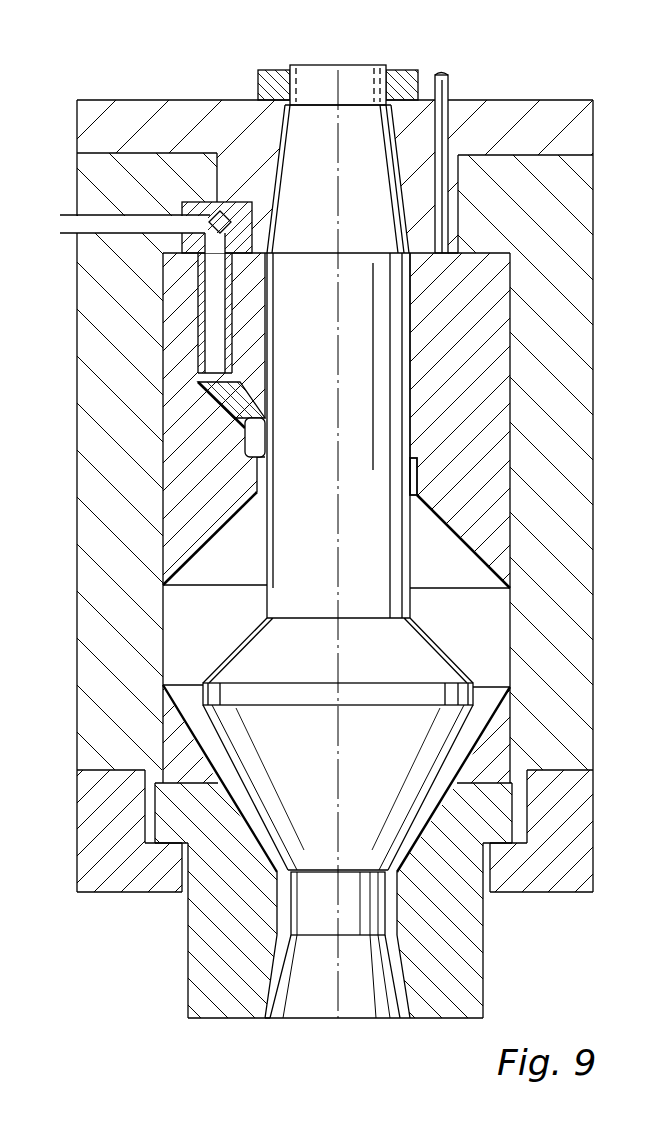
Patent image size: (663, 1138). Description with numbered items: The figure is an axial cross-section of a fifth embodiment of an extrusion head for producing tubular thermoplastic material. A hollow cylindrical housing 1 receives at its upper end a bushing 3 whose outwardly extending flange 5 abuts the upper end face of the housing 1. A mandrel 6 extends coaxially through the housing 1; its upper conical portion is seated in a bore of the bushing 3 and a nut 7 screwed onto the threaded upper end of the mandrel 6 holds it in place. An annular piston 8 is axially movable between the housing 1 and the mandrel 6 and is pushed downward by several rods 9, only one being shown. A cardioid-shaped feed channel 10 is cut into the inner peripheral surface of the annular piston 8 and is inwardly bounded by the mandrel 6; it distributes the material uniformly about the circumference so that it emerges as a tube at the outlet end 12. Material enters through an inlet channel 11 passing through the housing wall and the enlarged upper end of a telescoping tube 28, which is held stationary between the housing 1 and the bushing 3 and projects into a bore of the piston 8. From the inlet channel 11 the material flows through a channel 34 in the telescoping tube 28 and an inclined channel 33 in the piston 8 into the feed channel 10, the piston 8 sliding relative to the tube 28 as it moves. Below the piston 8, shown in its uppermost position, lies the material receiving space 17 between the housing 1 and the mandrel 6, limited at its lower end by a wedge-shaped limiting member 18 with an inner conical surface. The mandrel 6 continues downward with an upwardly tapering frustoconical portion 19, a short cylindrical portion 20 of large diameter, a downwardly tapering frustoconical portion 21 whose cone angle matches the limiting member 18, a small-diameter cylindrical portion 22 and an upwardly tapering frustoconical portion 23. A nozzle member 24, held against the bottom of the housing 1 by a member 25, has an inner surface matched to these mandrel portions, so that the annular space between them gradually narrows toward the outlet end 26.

The housing 1 is at (83, 560).
The bushing 3 is at (452, 207).
The flange 5 is at (545, 108).
The mandrel 6 is at (343, 492).
The nut 7 is at (398, 82).
The annular piston 8 is at (470, 394).
The rod 9 is at (447, 85).
The cardioid-shaped feed channel 10 is at (258, 436).
The inlet channel 11 is at (85, 227).
The outlet end 12 is at (412, 485).
The material receiving space 17 is at (476, 636).
The limiting member 18 is at (180, 738).
The upwardly tapering frustoconical portion 19 is at (350, 669).
The short cylindrical portion of large diameter 20 is at (273, 690).
The downwardly tapering frustoconical portion 21 is at (350, 796).
The cylindrical portion of small diameter 22 is at (350, 909).
The upwardly tapering frustoconical portion 23 is at (350, 991).
The nozzle member 24 is at (200, 965).
The holding member 25 is at (88, 830).
The outlet end 26 is at (259, 1024).
The telescoping tube 28 is at (240, 200).
The inclined channel 33 is at (235, 398).
The channel 34 is at (215, 310).